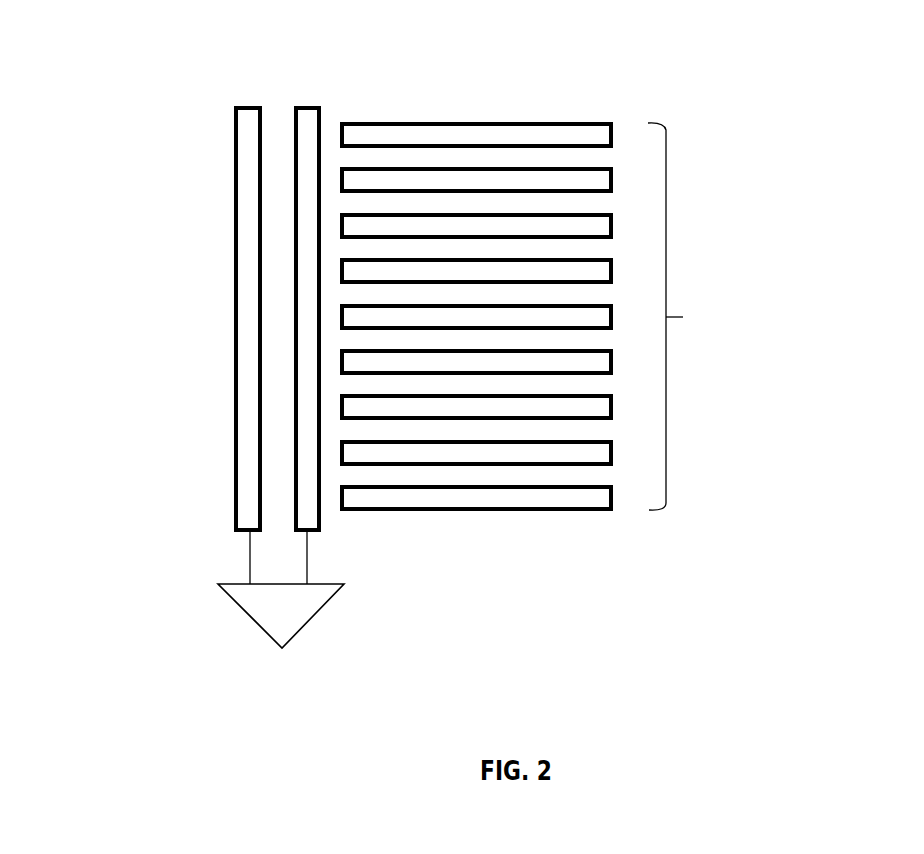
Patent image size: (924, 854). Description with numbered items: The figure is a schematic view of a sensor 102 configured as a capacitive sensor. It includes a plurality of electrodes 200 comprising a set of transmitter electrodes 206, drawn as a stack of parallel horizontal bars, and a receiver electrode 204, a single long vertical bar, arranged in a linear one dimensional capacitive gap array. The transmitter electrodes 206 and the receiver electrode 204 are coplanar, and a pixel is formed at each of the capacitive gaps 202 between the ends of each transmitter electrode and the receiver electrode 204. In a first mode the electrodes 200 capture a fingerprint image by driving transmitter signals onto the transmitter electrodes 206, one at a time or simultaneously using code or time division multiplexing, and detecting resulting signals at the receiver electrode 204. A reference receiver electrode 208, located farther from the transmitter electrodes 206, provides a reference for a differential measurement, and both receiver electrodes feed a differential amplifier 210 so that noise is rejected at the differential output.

The electrodes 200 is at (485, 70).
The sensor 102 is at (772, 95).
The receiver electrode 204 is at (322, 118).
The reference receiver electrode 208 is at (237, 417).
The transmitter electrodes 206 is at (683, 318).
The capacitive gaps 202 is at (349, 530).
The differential amplifier 210 is at (313, 617).